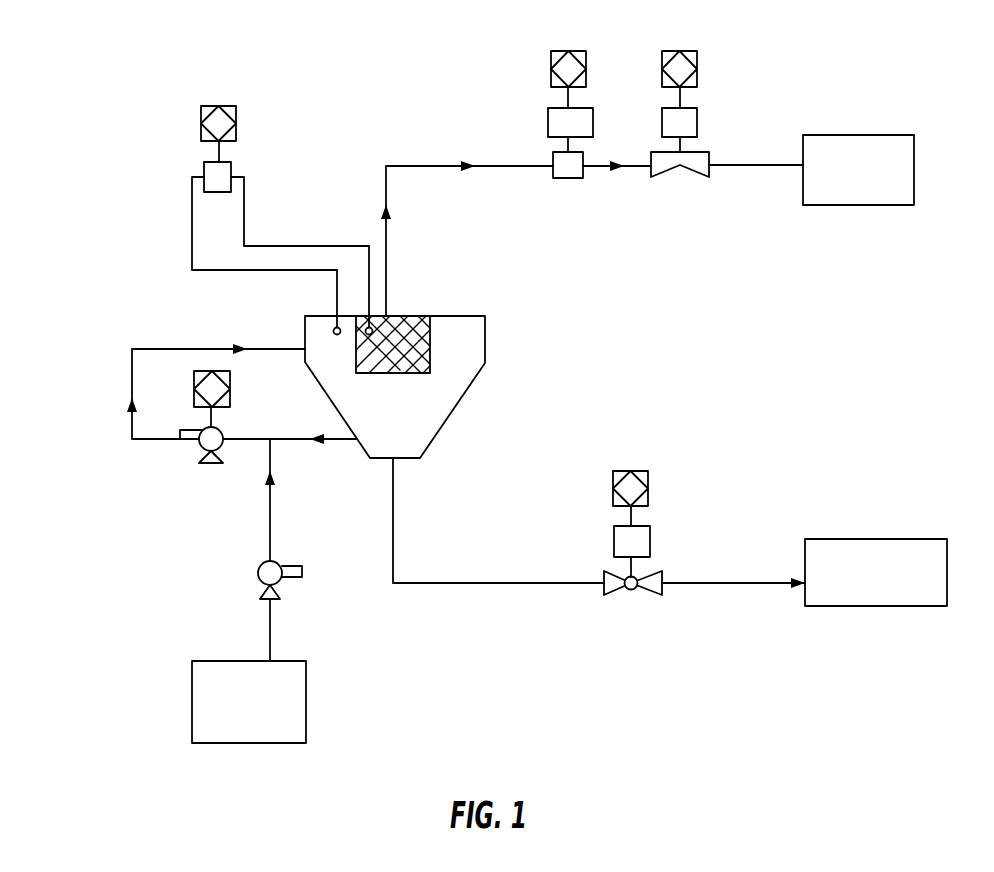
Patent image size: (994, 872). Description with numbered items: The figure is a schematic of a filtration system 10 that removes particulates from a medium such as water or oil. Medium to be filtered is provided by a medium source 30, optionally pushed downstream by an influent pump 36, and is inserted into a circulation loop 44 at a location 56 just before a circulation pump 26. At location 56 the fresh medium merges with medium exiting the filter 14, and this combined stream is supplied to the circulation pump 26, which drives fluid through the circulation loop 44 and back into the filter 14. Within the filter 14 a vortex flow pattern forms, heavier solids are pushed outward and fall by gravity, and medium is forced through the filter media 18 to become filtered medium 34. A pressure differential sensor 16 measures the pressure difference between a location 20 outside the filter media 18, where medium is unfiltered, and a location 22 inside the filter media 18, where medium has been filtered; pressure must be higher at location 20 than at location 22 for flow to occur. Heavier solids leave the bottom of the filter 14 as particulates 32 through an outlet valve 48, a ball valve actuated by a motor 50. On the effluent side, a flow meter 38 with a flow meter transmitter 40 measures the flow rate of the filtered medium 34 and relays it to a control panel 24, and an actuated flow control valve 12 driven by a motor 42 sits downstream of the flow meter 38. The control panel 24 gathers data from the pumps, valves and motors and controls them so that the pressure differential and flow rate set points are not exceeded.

The filtration system 10 is at (85, 52).
The actuated flow control valve 12 is at (592, 185).
The filter 14 is at (457, 408).
The pressure differential sensor 16 is at (233, 170).
The filter media 18 is at (420, 316).
The location 20 is at (333, 332).
The location 22 is at (357, 339).
The control panel 24 is at (230, 106).
The circulation pump 26 is at (201, 458).
The medium source 30 is at (191, 722).
The particulates 32 is at (883, 606).
The filtered medium 34 is at (803, 190).
The influent pump 36 is at (258, 578).
The flow meter 38 is at (567, 178).
The flow meter transmitter 40 is at (594, 118).
The motor 42 is at (698, 118).
The circulation loop 44 is at (105, 371).
The outlet valve 48 is at (638, 591).
The motor 50 is at (652, 539).
The location 56 is at (270, 440).